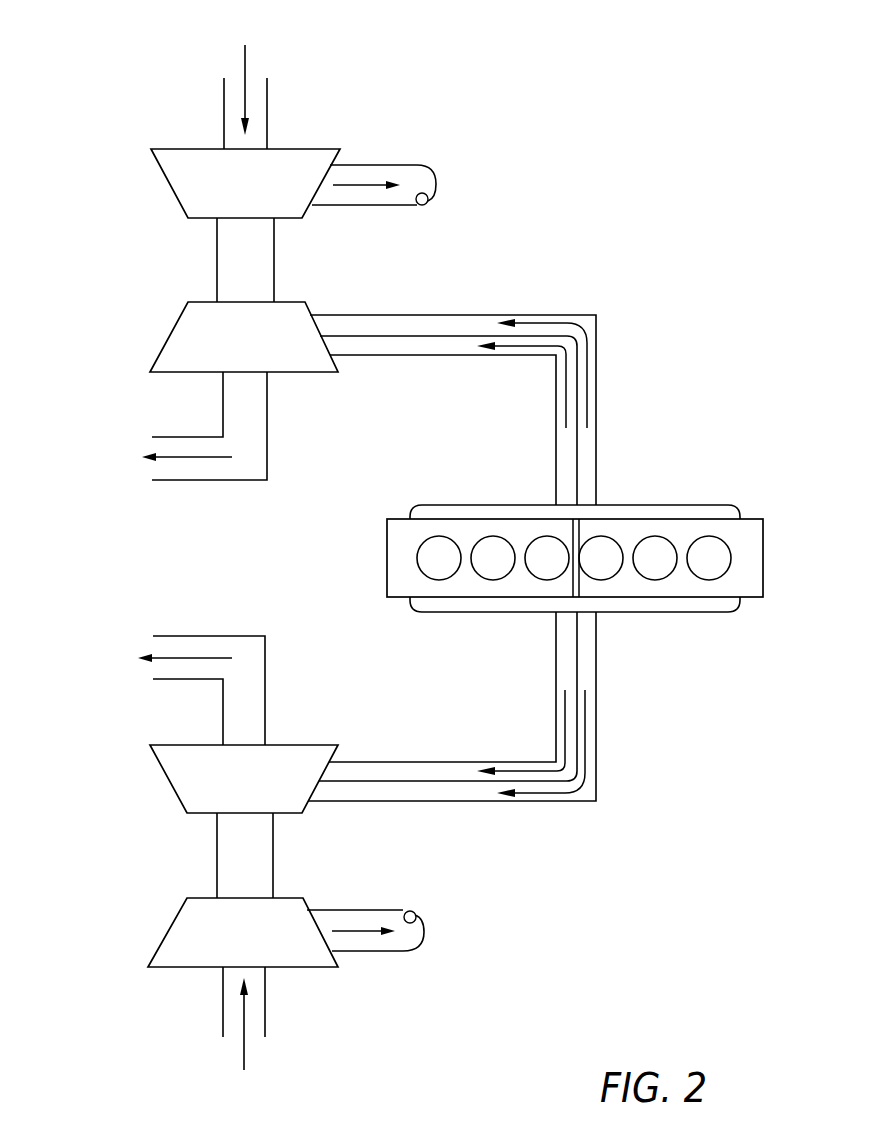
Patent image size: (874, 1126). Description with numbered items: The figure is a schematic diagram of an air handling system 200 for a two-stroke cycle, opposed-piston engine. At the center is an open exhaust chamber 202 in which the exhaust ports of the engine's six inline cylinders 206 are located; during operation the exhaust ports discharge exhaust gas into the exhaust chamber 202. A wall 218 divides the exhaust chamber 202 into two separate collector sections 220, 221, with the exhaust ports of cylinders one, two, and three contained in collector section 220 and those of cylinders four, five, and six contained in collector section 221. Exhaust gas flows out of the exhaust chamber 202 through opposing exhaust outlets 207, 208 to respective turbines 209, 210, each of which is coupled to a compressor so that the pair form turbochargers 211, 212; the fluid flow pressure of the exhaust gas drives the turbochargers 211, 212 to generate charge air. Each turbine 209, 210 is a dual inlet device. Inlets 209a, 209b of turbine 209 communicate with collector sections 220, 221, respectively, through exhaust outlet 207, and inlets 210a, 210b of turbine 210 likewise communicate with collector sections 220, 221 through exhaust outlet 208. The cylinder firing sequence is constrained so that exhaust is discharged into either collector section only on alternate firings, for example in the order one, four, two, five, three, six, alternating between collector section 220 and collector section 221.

The air handling system 200 is at (645, 160).
The exhaust chamber 202 is at (767, 535).
The cylinder 206 is at (417, 545).
The exhaust outlet 207 is at (657, 518).
The exhaust outlet 208 is at (620, 597).
The turbine 209 is at (172, 330).
The inlet 209a is at (330, 350).
The inlet 209b is at (312, 317).
The turbine 210 is at (168, 778).
The inlet 210a is at (330, 763).
The inlet 210b is at (312, 797).
The turbocharger 211 is at (122, 250).
The turbocharger 212 is at (166, 842).
The wall 218 is at (581, 528).
The collector section 220 is at (398, 575).
The collector section 221 is at (748, 580).